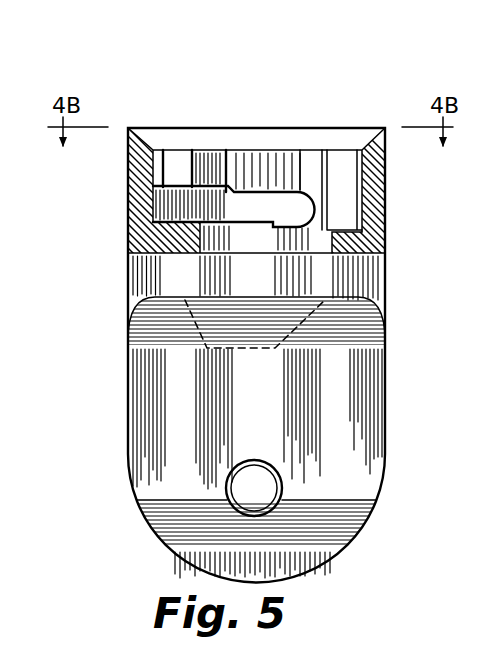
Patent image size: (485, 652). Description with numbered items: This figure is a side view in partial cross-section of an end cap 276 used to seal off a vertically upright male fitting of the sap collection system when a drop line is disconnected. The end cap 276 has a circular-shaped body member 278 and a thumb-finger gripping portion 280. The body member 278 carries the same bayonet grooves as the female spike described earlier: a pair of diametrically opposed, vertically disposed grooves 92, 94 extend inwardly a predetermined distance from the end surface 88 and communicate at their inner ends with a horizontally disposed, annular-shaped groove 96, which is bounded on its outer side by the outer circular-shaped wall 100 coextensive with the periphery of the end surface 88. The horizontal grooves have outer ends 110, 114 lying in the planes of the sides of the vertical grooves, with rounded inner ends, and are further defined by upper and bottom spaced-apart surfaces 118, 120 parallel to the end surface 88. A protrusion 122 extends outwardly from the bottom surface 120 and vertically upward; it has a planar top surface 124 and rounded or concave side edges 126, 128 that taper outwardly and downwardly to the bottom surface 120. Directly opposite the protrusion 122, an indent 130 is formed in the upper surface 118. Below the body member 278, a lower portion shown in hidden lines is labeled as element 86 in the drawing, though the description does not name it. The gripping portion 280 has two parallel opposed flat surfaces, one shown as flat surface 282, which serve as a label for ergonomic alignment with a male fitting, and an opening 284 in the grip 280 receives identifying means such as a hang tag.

The hub portion 86 is at (212, 350).
The end surface 88 is at (204, 190).
The vertically disposed groove 92 is at (169, 163).
The vertically disposed groove 94 is at (338, 163).
The horizontally disposed groove 96 is at (241, 205).
The outer circular-shaped wall 100 is at (155, 204).
The outer end 110 is at (160, 200).
The outer end 114 is at (293, 190).
The upper surface 118 is at (259, 190).
The bottom surface 120 is at (273, 225).
The protrusion 122 is at (215, 222).
The top surface 124 is at (197, 220).
The side edge 126 is at (187, 223).
The side edge 128 is at (191, 238).
The indent 130 is at (232, 190).
The end cap 276 is at (383, 118).
The body member 278 is at (392, 198).
The thumb-finger gripping portion 280 is at (175, 496).
The flat surface 282 is at (352, 405).
The opening 284 is at (262, 500).